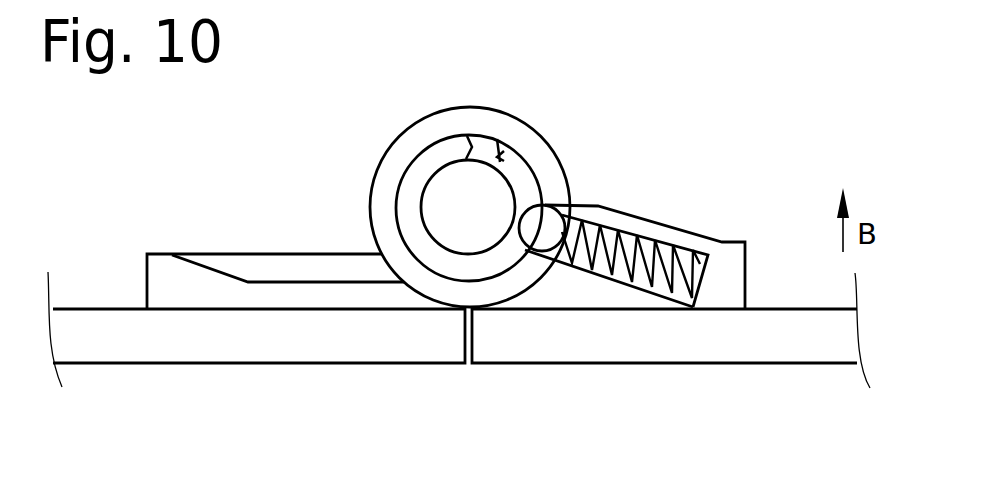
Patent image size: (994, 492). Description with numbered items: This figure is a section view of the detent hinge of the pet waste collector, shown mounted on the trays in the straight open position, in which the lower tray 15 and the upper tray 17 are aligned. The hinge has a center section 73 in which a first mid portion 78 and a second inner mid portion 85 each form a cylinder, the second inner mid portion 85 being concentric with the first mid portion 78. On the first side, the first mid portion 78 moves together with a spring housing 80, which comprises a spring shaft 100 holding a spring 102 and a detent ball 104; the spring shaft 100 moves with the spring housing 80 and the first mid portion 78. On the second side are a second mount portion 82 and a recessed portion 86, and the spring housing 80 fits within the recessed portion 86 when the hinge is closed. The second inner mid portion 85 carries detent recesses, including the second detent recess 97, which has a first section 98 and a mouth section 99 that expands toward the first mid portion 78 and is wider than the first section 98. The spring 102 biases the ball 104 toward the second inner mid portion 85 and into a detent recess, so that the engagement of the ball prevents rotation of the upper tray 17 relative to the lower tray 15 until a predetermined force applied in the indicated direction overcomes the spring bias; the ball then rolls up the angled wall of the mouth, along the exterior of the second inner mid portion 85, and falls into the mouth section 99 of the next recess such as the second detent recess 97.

The lower tray 15 is at (118, 348).
The upper tray 17 is at (775, 345).
The center section 73 is at (394, 67).
The first mid portion 78 is at (387, 182).
The spring housing 80 is at (677, 233).
The second mount portion 82 is at (238, 236).
The second inner mid portion 85 is at (438, 155).
The recessed portion 86 is at (278, 258).
The second detent recess 97 is at (503, 152).
The first section 98 is at (495, 158).
The mouth section 99 is at (473, 140).
The spring shaft 100 is at (708, 236).
The spring 102 is at (633, 242).
The detent ball 104 is at (548, 218).